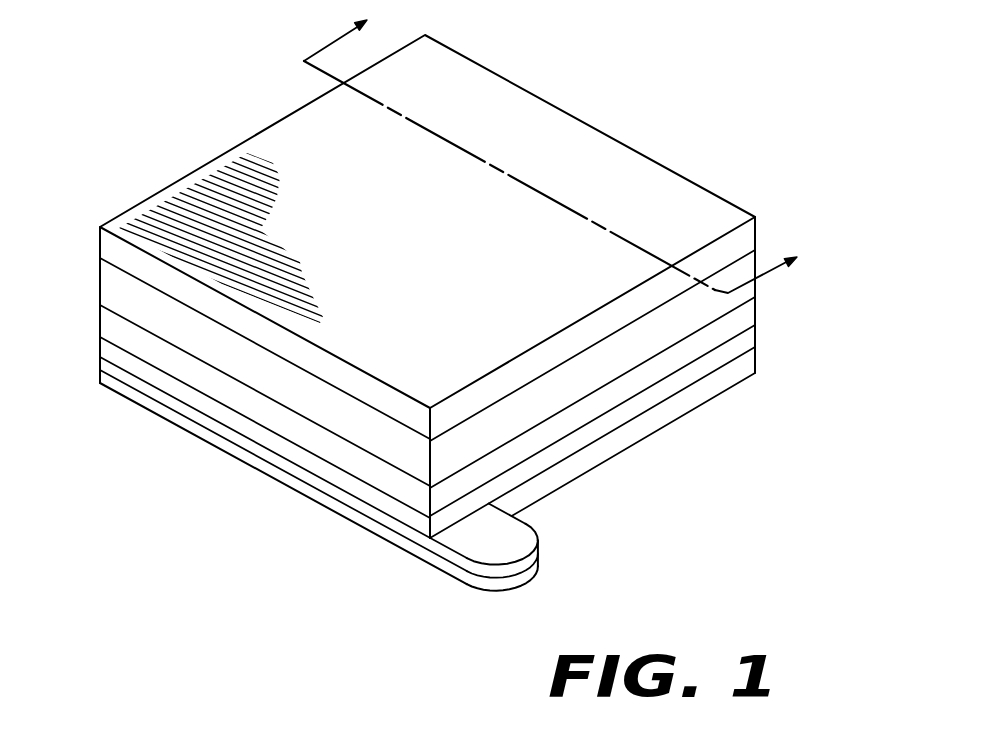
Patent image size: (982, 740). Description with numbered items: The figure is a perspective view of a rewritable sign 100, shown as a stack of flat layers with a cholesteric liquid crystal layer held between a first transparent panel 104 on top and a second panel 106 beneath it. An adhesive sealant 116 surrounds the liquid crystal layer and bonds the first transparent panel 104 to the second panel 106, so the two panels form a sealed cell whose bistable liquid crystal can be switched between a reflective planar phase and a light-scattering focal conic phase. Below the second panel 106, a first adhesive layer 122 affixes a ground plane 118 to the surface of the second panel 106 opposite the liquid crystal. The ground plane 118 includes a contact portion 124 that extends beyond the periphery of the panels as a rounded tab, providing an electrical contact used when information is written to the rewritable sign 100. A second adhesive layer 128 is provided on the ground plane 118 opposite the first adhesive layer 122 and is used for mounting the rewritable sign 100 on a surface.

The rewritable sign 100 is at (225, 110).
The first transparent panel 104 is at (583, 152).
The adhesive sealant 116 is at (685, 325).
The second panel 106 is at (647, 380).
The first adhesive layer 122 is at (268, 437).
The ground plane 118 is at (343, 495).
The contact portion 124 is at (510, 542).
The second adhesive layer 128 is at (447, 575).